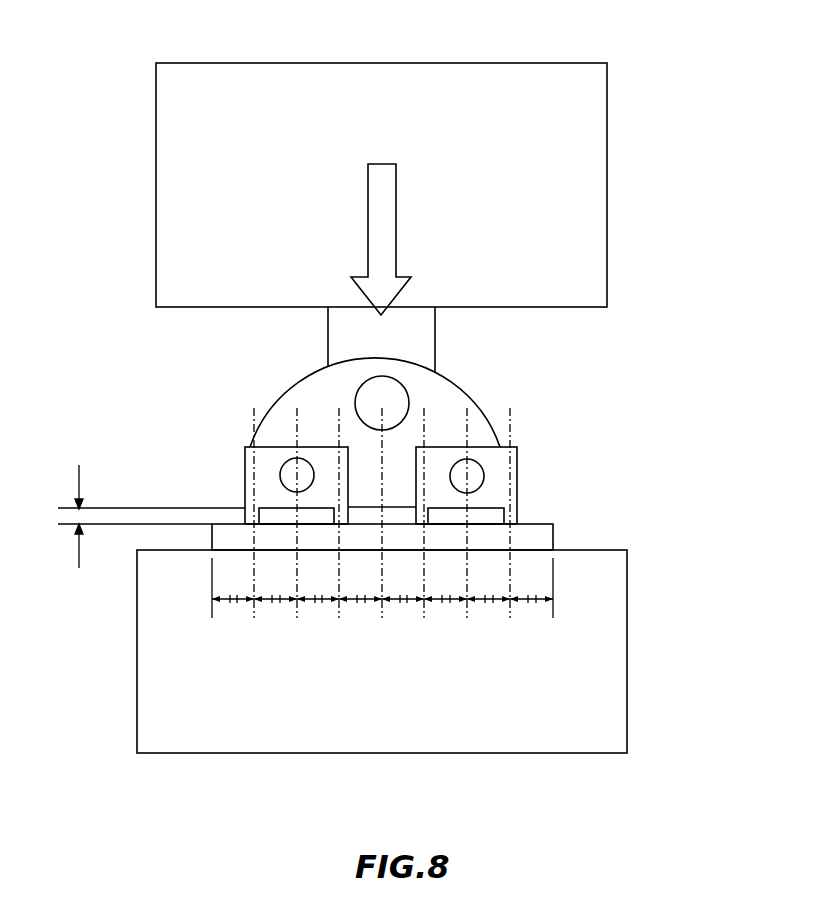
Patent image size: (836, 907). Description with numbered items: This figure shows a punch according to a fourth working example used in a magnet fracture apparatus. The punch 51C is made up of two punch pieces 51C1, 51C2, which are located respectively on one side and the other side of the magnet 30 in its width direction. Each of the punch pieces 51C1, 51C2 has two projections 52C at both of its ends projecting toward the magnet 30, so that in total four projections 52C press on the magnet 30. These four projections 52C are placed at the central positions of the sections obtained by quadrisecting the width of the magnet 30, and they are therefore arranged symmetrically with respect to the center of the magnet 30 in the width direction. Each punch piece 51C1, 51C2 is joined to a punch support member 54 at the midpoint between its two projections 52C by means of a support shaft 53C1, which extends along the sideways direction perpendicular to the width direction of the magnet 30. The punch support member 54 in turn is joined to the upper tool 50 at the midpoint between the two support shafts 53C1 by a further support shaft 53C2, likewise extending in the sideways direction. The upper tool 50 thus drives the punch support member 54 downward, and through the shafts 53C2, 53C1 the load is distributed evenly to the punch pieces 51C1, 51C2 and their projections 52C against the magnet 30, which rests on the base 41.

The upper tool 50 is at (587, 186).
The punch 51C is at (433, 427).
The punch piece 51C1 is at (497, 469).
The punch piece 51C2 is at (263, 466).
The projections 52C is at (332, 513).
The support shaft 53C1 is at (283, 465).
The support shaft 53C2 is at (390, 393).
The punch support member 54 is at (440, 395).
The magnet 30 is at (540, 535).
The base (42) 41 is at (602, 637).